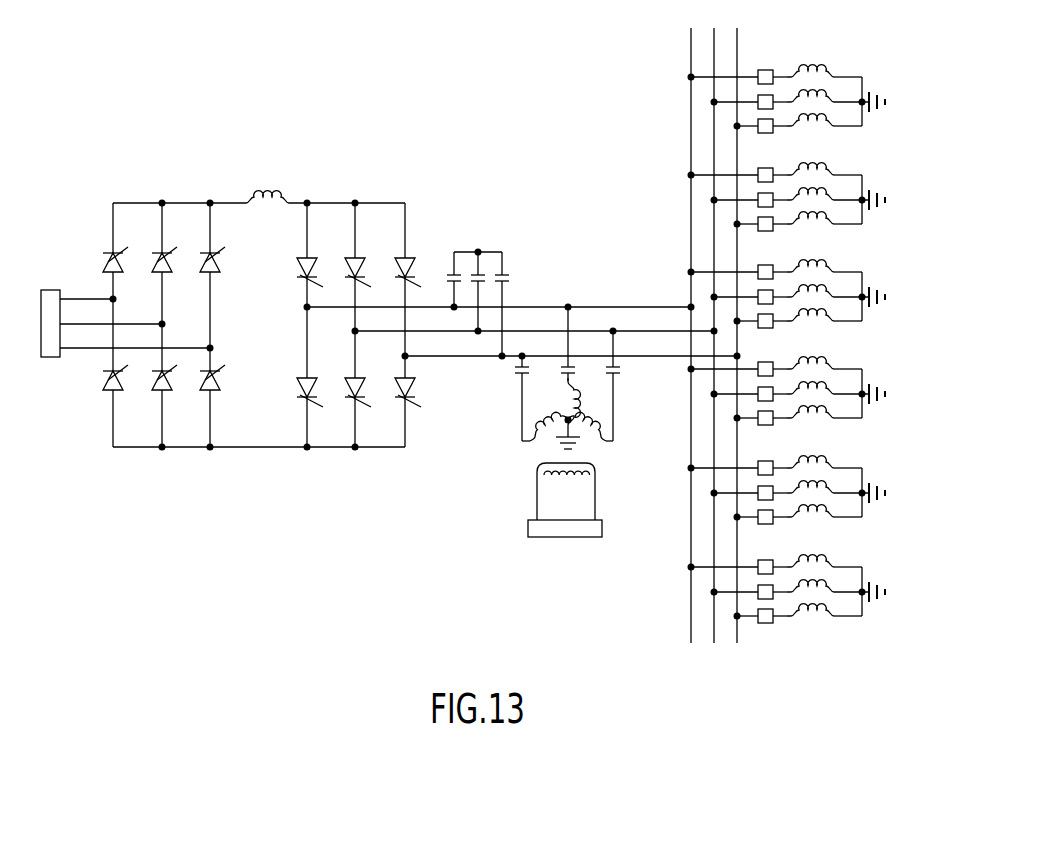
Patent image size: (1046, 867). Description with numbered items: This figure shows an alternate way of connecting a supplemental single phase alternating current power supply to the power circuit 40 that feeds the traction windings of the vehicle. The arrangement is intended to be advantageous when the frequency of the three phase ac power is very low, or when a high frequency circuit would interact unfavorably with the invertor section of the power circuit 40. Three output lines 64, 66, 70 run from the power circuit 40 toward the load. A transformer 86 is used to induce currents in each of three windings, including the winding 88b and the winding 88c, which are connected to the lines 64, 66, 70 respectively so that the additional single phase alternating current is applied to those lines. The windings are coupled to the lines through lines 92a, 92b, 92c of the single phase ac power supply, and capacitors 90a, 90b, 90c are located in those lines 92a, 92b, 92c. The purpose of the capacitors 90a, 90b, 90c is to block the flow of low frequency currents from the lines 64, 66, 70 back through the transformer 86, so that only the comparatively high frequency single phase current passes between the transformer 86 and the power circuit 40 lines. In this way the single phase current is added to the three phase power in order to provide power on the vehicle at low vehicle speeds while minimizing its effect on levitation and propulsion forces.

The power circuit 40 is at (238, 167).
The line 64 is at (333, 308).
The line 66 is at (377, 333).
The line 70 is at (668, 357).
The transformer 86 is at (603, 502).
The winding 88b is at (575, 400).
The winding 88c is at (540, 438).
The capacitor 90a is at (515, 370).
The capacitor 90b is at (562, 368).
The capacitor 90c is at (620, 372).
The line 92a is at (520, 405).
The line 92b is at (572, 345).
The line 92c is at (617, 345).